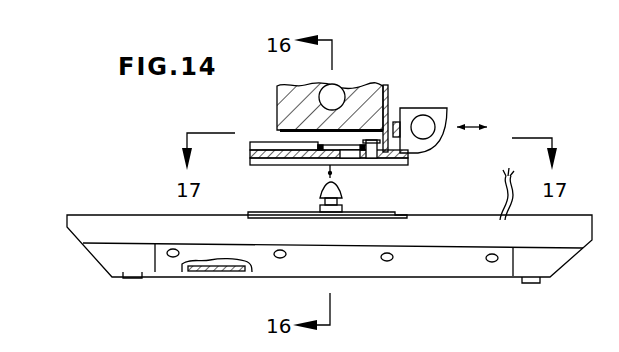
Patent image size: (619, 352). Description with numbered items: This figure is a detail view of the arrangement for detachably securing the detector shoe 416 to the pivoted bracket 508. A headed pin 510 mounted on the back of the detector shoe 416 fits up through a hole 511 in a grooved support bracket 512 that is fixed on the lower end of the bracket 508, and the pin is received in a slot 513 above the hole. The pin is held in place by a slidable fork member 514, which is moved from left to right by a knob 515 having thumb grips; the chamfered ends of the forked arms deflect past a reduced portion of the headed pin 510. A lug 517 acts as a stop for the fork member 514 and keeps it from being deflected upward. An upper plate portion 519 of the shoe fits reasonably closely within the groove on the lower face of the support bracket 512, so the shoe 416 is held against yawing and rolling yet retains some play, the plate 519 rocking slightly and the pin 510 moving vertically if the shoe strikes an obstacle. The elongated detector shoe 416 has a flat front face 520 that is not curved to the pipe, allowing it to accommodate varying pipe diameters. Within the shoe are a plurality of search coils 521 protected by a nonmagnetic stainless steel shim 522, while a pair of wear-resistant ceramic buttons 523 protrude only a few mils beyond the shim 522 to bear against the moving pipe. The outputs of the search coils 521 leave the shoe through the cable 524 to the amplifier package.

The pivoted bracket 508 is at (362, 90).
The slot 513 is at (275, 128).
The knob 515 is at (445, 112).
The lug 517 is at (374, 142).
The grooved support bracket 512 is at (260, 160).
The hole 511 is at (325, 167).
The slidable fork member 514 is at (358, 165).
The headed pin 510 is at (320, 188).
The upper plate portion 519 is at (395, 212).
The flat front face 520 is at (438, 278).
The detector shoe 416 is at (473, 227).
The shim 522 is at (362, 267).
The search coils 521 is at (212, 275).
The ceramic buttons 523 is at (128, 280).
The cable 524 is at (512, 203).